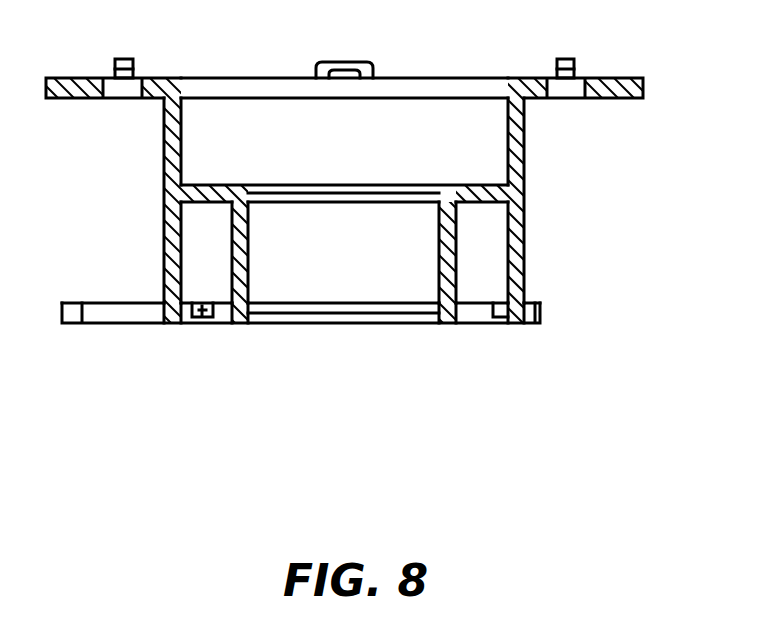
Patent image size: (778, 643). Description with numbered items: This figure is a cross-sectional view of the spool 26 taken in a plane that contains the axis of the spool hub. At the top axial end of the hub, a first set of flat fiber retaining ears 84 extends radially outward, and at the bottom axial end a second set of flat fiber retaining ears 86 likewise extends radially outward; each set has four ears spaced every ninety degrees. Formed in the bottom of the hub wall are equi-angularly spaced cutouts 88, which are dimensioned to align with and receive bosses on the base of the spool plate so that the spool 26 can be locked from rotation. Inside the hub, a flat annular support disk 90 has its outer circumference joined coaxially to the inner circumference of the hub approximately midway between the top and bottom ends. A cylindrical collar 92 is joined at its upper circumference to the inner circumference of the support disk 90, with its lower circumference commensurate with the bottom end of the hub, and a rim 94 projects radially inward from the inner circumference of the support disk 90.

The spool 26 is at (527, 208).
The first set of flat fiber retaining ears 84 is at (75, 77).
The second set of flat fiber retaining ears 86 is at (103, 312).
The cutouts 88 is at (202, 312).
The support disk 90 is at (218, 184).
The collar 92 is at (250, 288).
The rim 94 is at (265, 192).